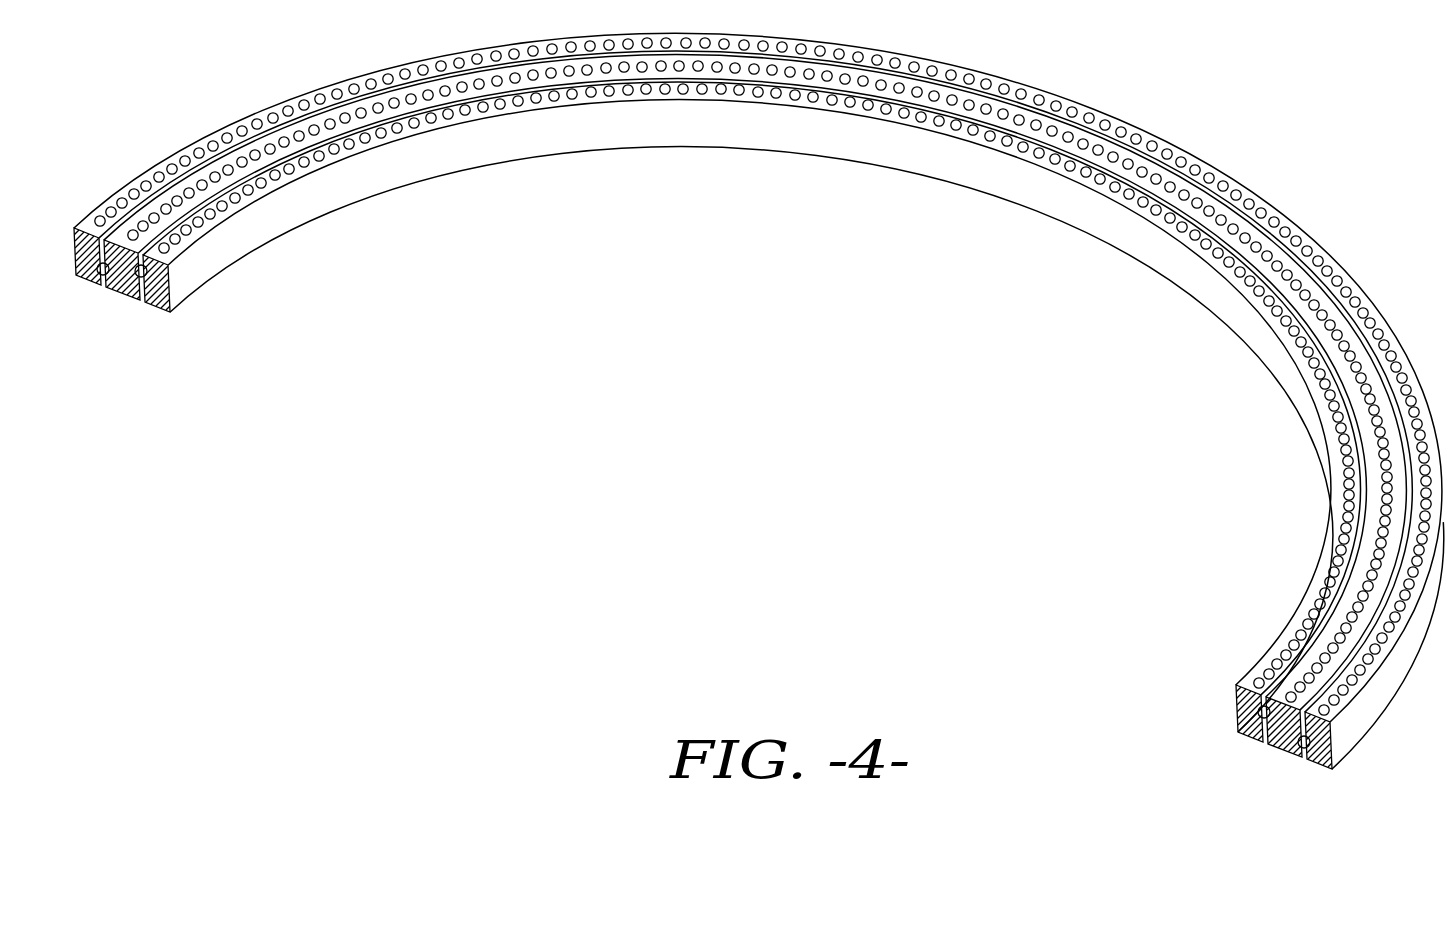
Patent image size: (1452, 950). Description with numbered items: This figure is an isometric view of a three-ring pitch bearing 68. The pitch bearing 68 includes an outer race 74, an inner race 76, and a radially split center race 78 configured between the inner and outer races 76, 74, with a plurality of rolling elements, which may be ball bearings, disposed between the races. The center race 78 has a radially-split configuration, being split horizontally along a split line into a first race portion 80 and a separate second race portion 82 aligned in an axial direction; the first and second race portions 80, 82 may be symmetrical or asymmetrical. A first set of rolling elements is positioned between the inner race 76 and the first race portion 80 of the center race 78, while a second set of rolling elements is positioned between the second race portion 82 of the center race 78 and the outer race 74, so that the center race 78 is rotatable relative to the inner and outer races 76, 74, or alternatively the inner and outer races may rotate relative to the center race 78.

The pitch bearing 68 is at (1268, 128).
The outer race 74 is at (79, 283).
The inner race 76 is at (152, 310).
The center race 78 is at (1345, 600).
The first race portion 80 is at (1276, 702).
The second race portion 82 is at (1272, 750).